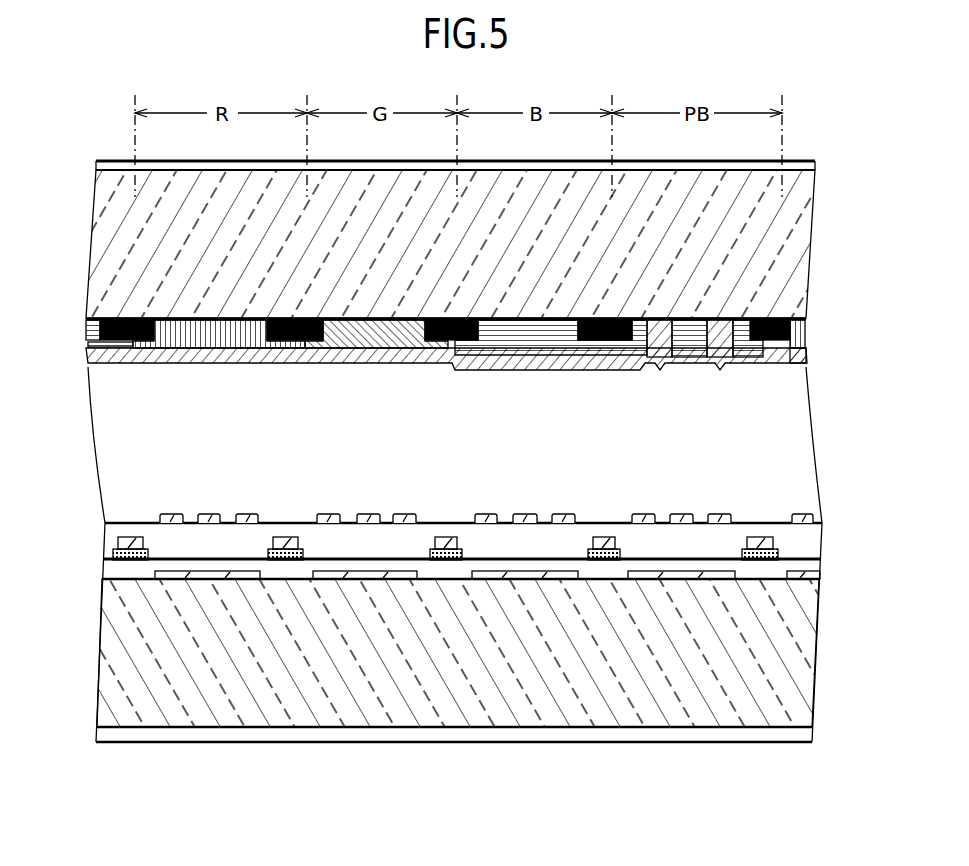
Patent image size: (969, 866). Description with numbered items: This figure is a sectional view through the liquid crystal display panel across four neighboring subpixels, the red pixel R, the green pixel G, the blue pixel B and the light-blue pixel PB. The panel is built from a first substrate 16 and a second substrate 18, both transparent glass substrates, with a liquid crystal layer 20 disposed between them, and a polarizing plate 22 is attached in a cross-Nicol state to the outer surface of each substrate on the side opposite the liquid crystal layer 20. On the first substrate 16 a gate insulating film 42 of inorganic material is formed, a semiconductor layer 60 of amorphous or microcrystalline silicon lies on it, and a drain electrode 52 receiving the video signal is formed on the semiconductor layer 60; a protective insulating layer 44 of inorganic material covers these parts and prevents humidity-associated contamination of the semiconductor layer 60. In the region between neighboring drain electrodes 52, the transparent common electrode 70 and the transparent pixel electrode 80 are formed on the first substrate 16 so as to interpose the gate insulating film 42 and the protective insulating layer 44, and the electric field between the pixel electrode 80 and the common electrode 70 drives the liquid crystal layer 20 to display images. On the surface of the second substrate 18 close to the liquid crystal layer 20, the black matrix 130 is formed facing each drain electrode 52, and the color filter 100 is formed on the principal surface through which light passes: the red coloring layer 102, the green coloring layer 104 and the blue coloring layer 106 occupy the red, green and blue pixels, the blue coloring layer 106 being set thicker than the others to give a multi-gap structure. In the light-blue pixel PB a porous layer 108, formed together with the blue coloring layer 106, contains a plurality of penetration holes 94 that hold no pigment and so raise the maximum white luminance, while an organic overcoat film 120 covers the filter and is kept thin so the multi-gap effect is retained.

The first substrate 16 is at (465, 690).
The second substrate 18 is at (790, 248).
The liquid crystal layer 20 is at (807, 458).
The polarizing plate 22 is at (808, 166).
The gate insulating film 42 is at (815, 569).
The protective insulating layer 44 is at (812, 542).
The drain electrode 52 is at (127, 560).
The semiconductor layer 60 is at (140, 549).
The common electrode 70 is at (200, 579).
The pixel electrode 80 is at (247, 513).
The penetration holes 94 is at (660, 366).
The color filter 100 is at (347, 370).
The red coloring layer 102 is at (205, 346).
The green coloring layer 104 is at (360, 346).
The blue coloring layer 106 is at (517, 336).
The porous layer 108 is at (690, 360).
The overcoat film 120 is at (781, 366).
The black matrix 130 is at (133, 346).